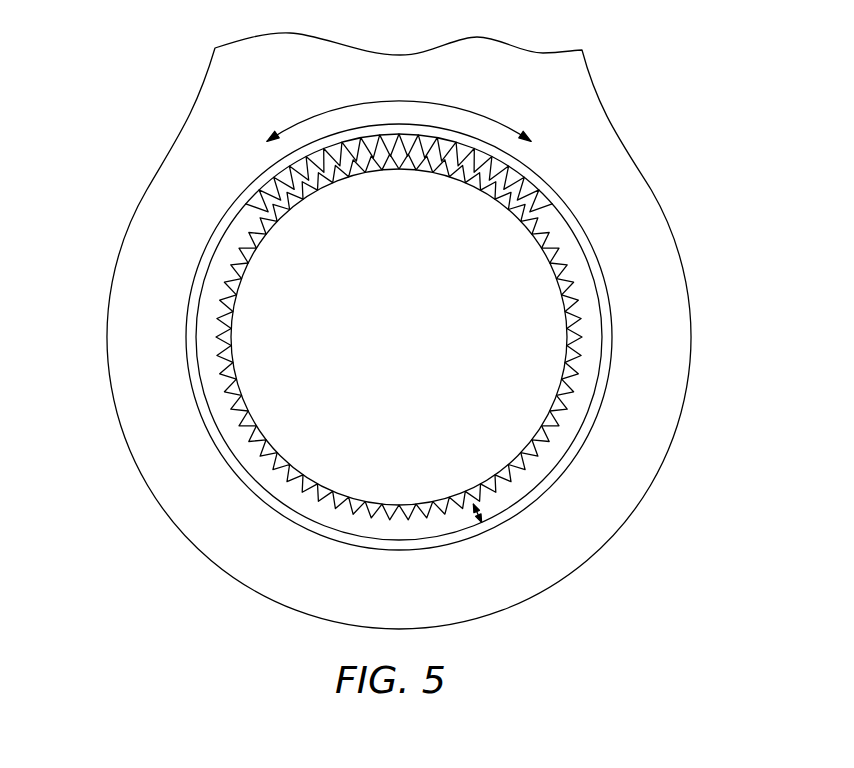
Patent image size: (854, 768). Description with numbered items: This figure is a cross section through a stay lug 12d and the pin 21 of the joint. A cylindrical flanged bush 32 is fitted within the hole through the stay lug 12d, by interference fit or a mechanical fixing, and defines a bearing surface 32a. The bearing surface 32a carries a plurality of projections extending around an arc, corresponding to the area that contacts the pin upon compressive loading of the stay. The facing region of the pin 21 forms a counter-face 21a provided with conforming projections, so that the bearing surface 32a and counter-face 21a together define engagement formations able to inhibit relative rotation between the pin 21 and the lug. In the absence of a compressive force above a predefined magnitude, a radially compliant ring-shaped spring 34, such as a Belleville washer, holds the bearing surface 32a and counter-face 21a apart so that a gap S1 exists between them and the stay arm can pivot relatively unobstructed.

The stay lug 12d is at (592, 132).
The cylindrical flanged bush 32 is at (601, 390).
The bearing surface 32a is at (242, 218).
The pin 21 is at (411, 346).
The counter-face 21a is at (567, 272).
The radially compliant ring-shaped spring 34 is at (287, 492).
The gap S1 is at (480, 512).